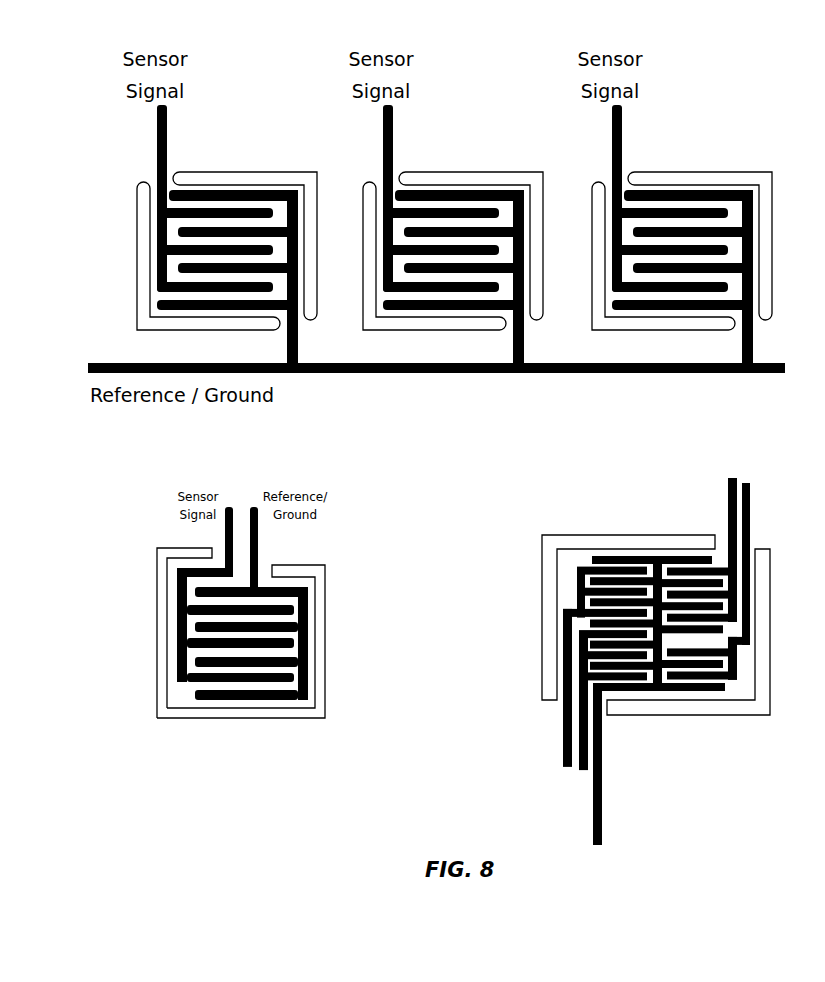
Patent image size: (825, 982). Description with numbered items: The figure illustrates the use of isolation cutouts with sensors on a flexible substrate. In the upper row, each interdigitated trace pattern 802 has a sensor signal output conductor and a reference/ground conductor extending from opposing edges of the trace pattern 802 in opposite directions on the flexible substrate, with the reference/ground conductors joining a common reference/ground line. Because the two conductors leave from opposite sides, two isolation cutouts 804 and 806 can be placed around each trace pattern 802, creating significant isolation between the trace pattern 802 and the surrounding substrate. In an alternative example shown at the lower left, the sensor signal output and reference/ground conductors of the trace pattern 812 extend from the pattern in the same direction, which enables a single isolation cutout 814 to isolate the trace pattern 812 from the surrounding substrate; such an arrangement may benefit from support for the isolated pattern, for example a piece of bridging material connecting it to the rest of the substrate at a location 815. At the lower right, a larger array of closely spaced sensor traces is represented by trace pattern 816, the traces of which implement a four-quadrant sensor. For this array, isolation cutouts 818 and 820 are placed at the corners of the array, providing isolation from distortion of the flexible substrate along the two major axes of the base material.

The trace pattern 802 is at (143, 166).
The isolation cutout 804 is at (137, 252).
The isolation cutout 806 is at (251, 172).
The trace pattern 812 is at (180, 695).
The isolation cutout 814 is at (162, 617).
The location of bridging material 815 is at (242, 710).
The trace pattern 816 is at (551, 744).
The isolation cutout 818 is at (552, 553).
The isolation cutout 820 is at (743, 705).